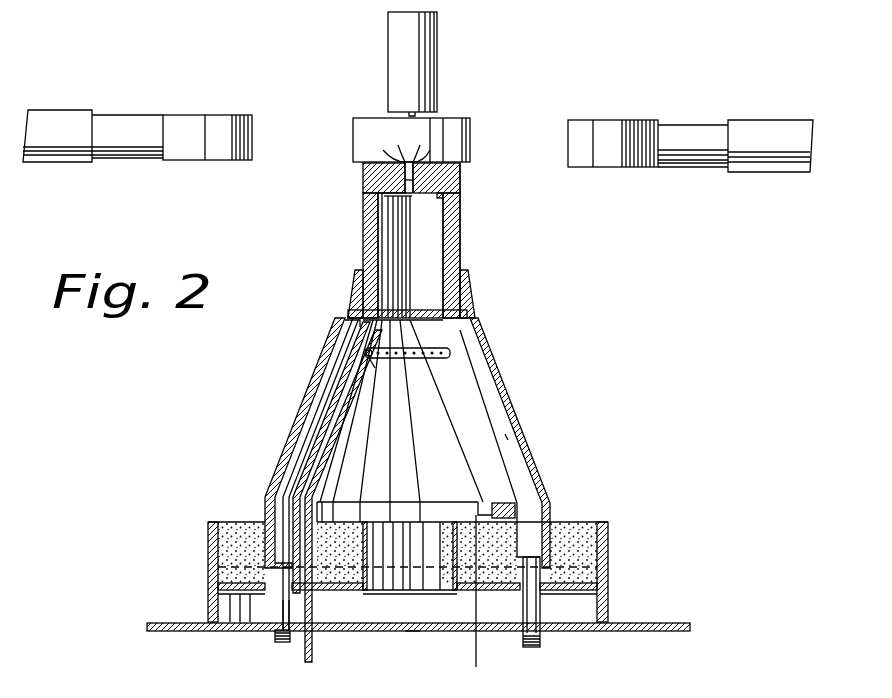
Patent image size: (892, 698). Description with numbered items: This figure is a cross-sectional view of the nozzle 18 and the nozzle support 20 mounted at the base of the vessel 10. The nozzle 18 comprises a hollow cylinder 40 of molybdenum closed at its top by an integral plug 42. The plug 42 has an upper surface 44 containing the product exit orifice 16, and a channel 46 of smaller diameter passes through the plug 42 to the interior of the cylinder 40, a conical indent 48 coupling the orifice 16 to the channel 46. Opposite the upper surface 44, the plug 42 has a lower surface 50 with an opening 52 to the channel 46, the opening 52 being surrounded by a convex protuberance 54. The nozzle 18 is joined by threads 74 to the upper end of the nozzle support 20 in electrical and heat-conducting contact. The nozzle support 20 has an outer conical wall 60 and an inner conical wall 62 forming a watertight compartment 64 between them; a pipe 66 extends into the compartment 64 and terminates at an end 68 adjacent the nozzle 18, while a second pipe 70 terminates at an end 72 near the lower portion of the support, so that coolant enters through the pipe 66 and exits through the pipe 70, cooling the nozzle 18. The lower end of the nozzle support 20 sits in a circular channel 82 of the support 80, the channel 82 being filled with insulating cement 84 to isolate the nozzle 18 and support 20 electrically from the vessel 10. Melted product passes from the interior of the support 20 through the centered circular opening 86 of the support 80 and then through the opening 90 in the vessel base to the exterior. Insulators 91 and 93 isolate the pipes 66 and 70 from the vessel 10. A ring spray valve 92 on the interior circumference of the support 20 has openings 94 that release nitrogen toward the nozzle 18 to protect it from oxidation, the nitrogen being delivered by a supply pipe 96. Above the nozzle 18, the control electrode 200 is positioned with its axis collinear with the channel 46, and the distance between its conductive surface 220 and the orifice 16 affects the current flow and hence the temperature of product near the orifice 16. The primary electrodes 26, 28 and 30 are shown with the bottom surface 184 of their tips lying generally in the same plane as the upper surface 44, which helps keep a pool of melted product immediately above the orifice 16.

The vessel 10 is at (660, 634).
The product exit orifice 16 is at (420, 153).
The nozzle 18 is at (474, 198).
The nozzle support 20 is at (496, 349).
The first primary electrode 26 is at (658, 123).
The second primary electrode 28 is at (463, 121).
The third primary electrode 30 is at (187, 120).
The hollow cylinder 40 is at (462, 243).
The plug 42 is at (448, 162).
The upper surface 44 is at (385, 160).
The channel 46 is at (404, 178).
The conical indent 48 is at (405, 160).
The lower surface 50 is at (460, 202).
The opening 52 is at (405, 212).
The convex protuberance 54 is at (400, 195).
The outer conical wall 60 is at (514, 403).
The inner conical wall 62 is at (481, 406).
The watertight compartment 64 is at (505, 434).
The pipe 66 is at (285, 606).
The end 68 is at (348, 315).
The second pipe 70 is at (551, 631).
The end 72 is at (550, 527).
The threads 74 is at (468, 287).
The support 80 is at (607, 552).
The circular channel 82 is at (588, 524).
The insulating cement 84 is at (577, 573).
The centered circular opening 86 is at (412, 537).
The opening 90 is at (412, 631).
The insulator 91 is at (300, 633).
The ring spray valve 92 is at (370, 363).
The insulator 93 is at (514, 634).
The openings 94 is at (440, 352).
The supply pipe 96 is at (330, 445).
The bottom surface 184 is at (230, 162).
The control electrode 200 is at (437, 32).
The conductive surface 220 is at (420, 110).